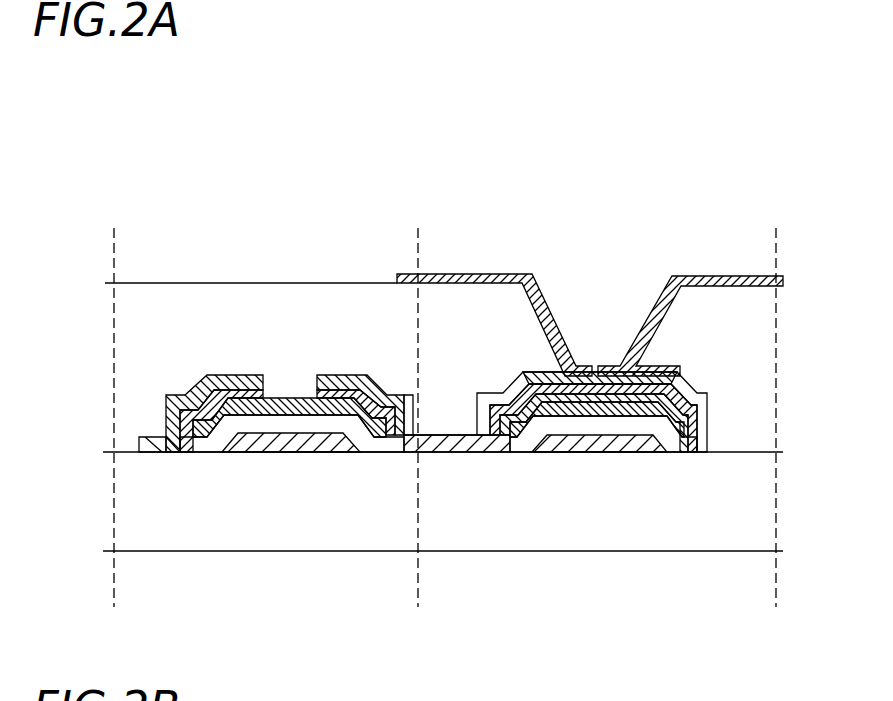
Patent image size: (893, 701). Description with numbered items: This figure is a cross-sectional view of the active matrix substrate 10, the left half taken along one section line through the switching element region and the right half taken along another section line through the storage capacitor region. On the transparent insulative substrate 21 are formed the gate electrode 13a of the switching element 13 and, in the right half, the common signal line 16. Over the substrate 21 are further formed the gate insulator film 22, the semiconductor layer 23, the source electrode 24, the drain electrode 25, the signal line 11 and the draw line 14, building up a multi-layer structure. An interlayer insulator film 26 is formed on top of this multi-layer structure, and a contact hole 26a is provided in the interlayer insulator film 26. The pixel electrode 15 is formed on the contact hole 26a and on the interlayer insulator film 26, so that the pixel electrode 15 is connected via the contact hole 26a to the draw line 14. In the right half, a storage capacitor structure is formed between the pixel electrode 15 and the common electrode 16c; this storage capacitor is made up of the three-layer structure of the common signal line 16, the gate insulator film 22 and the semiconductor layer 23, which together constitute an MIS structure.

The active matrix substrate 10 is at (153, 136).
The signal line 11 is at (152, 437).
The switching element 13 is at (290, 364).
The gate electrode 13a is at (262, 443).
The draw line 14 is at (602, 370).
The pixel electrode 15 is at (523, 275).
The common signal line 16 is at (622, 532).
The common electrode 16c is at (616, 445).
The transparent insulative substrate 21 is at (145, 527).
The gate insulator film 22 is at (375, 447).
The semiconductor layer 23 is at (353, 378).
The source electrode 24 is at (228, 378).
The drain electrode 25 is at (330, 390).
The interlayer insulator film 26 is at (168, 300).
The contact hole 26a is at (630, 253).